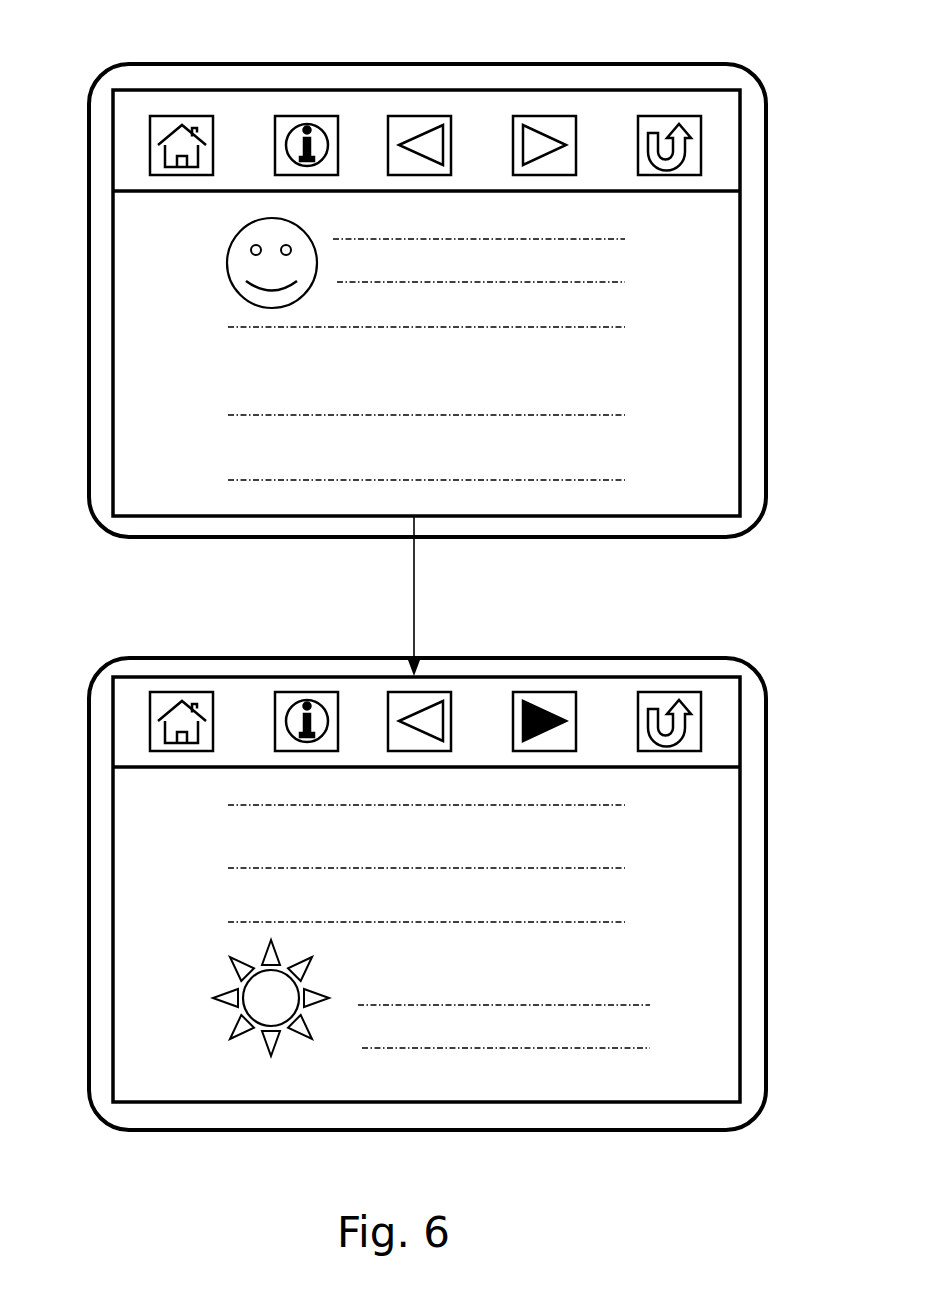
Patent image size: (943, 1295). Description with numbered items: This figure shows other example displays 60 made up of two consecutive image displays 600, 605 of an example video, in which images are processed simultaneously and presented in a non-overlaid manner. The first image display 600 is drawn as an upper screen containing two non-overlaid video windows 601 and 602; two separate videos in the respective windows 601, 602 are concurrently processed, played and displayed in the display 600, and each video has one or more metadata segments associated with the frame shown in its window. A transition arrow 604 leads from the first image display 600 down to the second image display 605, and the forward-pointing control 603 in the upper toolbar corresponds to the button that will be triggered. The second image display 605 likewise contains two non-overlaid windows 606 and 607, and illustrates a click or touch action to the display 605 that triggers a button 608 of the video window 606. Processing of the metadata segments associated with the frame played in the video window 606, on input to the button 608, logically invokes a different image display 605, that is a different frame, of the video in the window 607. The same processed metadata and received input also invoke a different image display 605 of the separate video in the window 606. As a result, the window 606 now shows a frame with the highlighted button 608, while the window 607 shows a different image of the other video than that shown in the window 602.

The example displays 60 is at (712, 48).
The first image display 600 is at (271, 70).
The video window 601 is at (112, 167).
The video window 602 is at (112, 342).
The forward button 603 is at (545, 108).
The transition arrow 604 is at (413, 636).
The second image display 605 is at (270, 658).
The video window 606 is at (112, 755).
The video window 607 is at (112, 930).
The button 608 is at (550, 690).